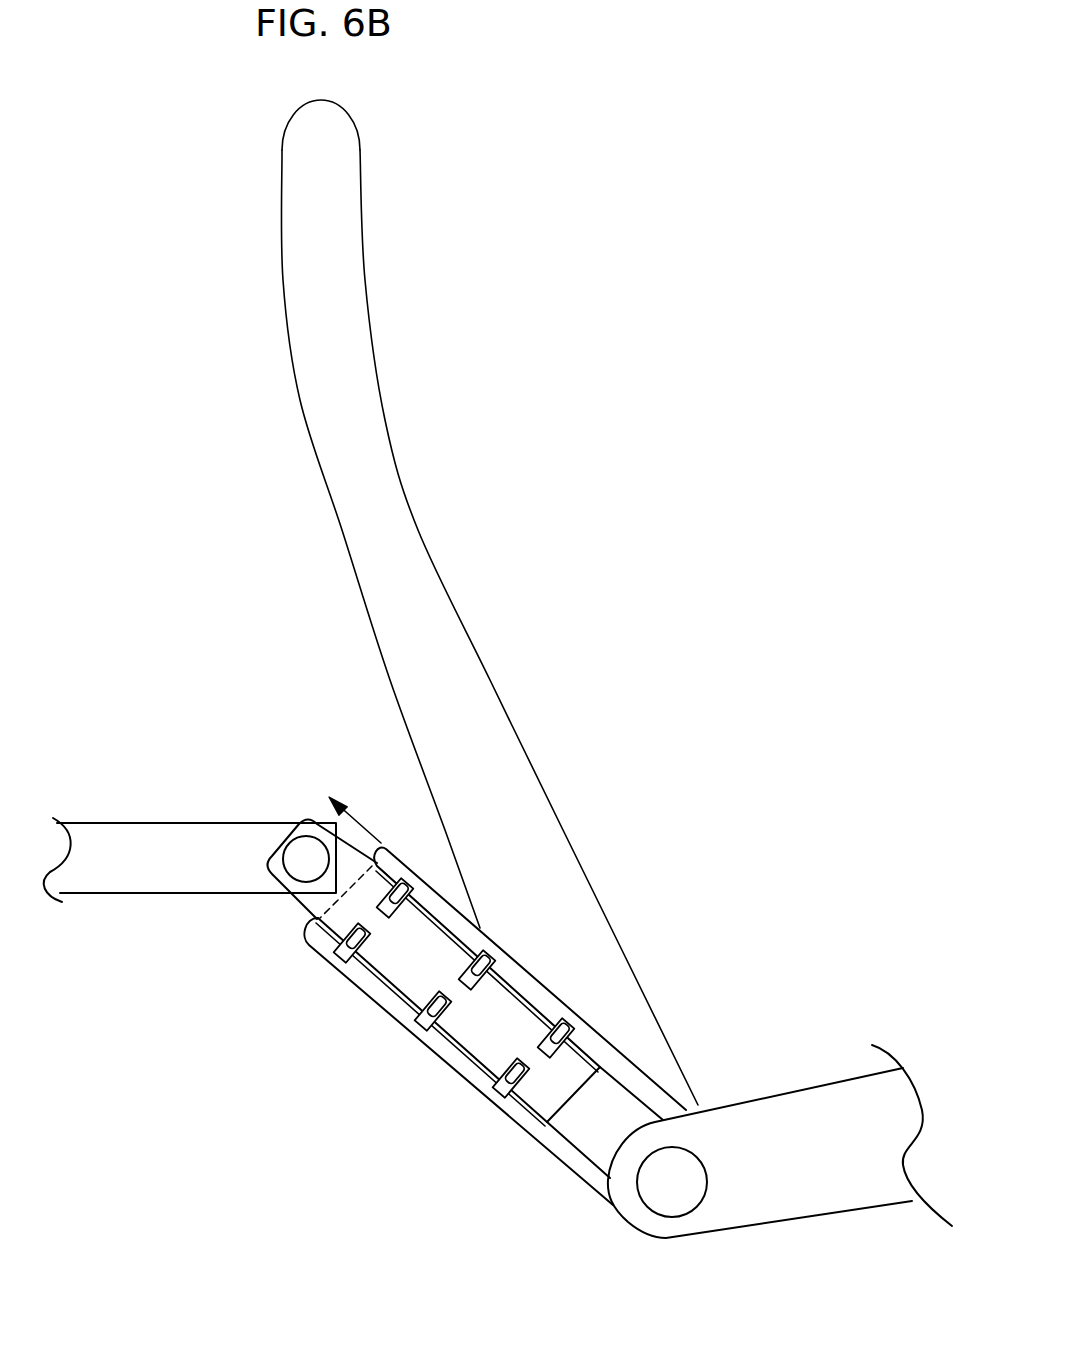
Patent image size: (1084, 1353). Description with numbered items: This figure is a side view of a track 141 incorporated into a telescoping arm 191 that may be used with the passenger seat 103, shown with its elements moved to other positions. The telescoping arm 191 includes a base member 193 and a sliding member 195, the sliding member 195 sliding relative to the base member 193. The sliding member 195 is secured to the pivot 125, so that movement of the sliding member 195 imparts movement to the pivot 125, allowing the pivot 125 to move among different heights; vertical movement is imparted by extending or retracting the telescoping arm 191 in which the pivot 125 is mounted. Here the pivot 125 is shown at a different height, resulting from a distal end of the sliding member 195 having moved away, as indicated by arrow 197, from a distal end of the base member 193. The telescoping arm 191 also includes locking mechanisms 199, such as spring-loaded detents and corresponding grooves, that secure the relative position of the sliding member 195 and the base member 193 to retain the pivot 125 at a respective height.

The seat 103 is at (548, 640).
The pivot 125 is at (297, 870).
The track 141 is at (731, 1240).
The telescoping arm 191 is at (488, 1026).
The base member 193 is at (466, 1075).
The sliding member 195 is at (541, 1098).
The arrow 197 is at (364, 827).
The locking mechanisms 199 is at (420, 1027).